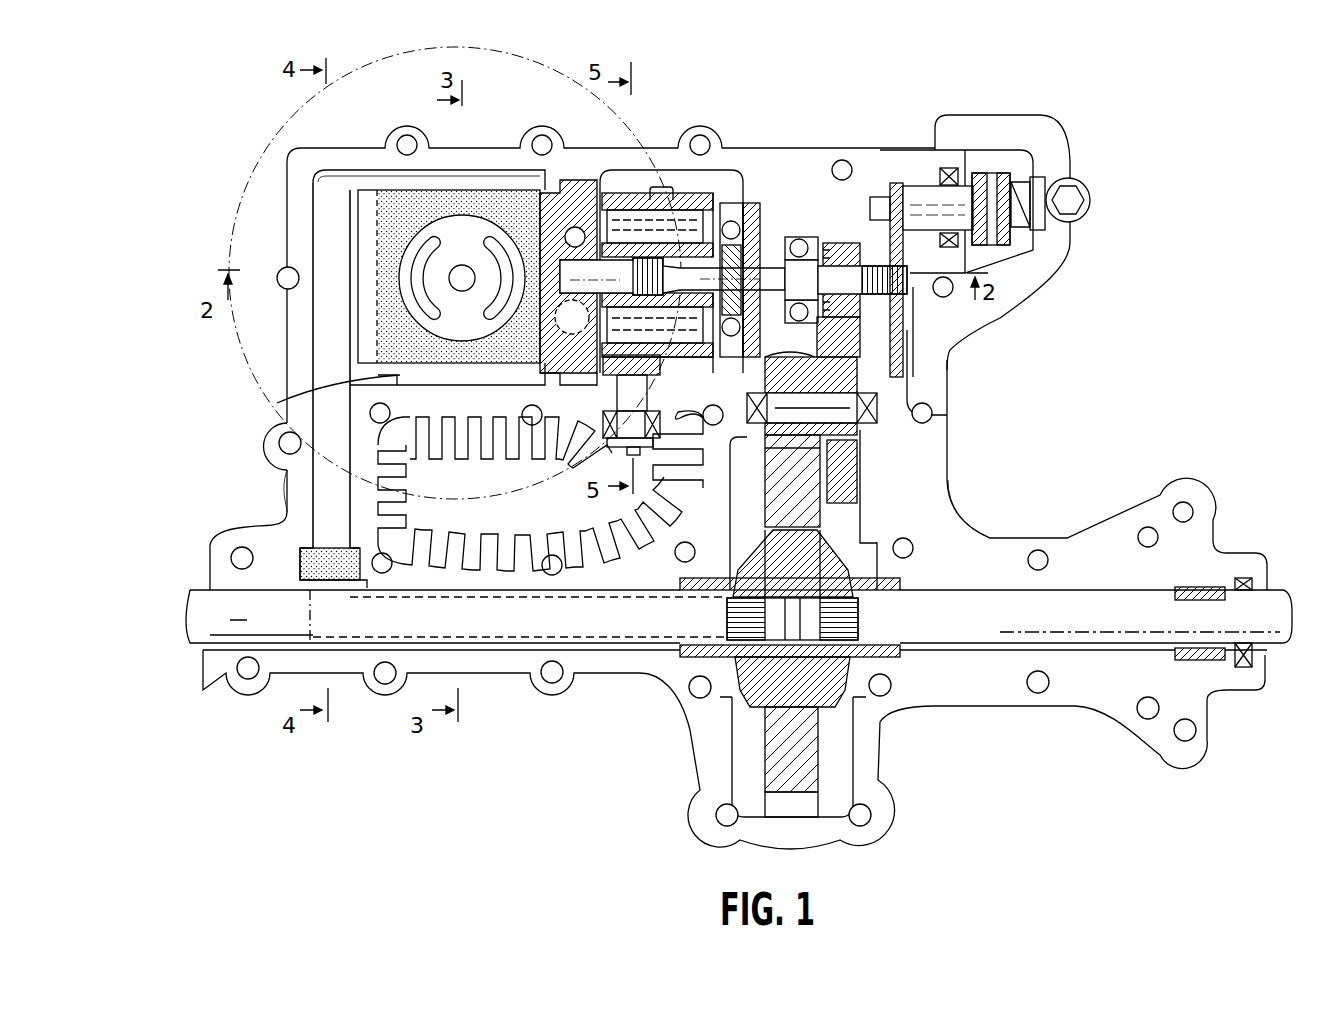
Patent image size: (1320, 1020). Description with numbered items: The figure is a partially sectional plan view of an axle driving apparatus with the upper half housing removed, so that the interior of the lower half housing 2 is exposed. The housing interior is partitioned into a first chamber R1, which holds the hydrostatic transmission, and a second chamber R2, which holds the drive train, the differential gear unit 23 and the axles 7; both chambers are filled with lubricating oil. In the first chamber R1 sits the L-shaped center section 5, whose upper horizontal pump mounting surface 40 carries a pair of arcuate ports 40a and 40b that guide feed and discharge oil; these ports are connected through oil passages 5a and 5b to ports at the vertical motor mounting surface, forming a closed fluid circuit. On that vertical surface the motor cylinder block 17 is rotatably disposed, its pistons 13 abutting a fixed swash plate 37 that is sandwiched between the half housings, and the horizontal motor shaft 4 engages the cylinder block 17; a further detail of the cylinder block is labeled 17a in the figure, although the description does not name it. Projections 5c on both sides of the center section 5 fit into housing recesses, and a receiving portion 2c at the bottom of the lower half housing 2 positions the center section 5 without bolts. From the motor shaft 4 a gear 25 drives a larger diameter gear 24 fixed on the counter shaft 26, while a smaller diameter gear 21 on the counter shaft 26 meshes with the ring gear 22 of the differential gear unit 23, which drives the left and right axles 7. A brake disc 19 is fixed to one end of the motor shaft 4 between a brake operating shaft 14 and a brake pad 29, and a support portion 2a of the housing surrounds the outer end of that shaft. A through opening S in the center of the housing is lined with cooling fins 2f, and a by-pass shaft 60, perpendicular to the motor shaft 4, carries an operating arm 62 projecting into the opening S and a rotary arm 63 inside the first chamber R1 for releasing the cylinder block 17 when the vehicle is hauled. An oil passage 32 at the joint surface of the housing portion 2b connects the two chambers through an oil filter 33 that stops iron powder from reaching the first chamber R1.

The lower half housing 2 is at (1067, 538).
The support portion 2a is at (982, 125).
The housing portion 2b is at (290, 497).
The receiving portion 2c is at (352, 162).
The cooling fins 2f is at (458, 446).
The motor shaft 4 is at (812, 296).
The center section 5 is at (355, 232).
The oil passage 5a is at (562, 180).
The oil passage 5b is at (530, 392).
The projections 5c is at (575, 200).
The axles 7 is at (594, 638).
The pistons 13 is at (728, 215).
The brake operating shaft 14 is at (915, 188).
The cylinder block 17 is at (622, 195).
The motor shaft 17a is at (662, 190).
The brake disc 19 is at (805, 372).
The smaller diameter gear 21 is at (870, 400).
The ring gear 22 is at (815, 765).
The differential gear unit 23 is at (840, 706).
The larger diameter gear 24 is at (820, 460).
The gear 25 is at (838, 245).
The counter shaft 26 is at (852, 440).
The brake pad 29 is at (879, 225).
The oil passage 32 is at (287, 473).
The oil filter 33 is at (327, 550).
The fixed swash plate 37 is at (757, 210).
The pump mounting surface 40 is at (462, 215).
The arcuate port 40a is at (425, 255).
The arcuate port 40b is at (498, 252).
The by-pass shaft 60 is at (648, 455).
The operating arm 62 is at (603, 440).
The rotary arm 63 is at (652, 382).
The first chamber R1 is at (277, 406).
The second chamber R2 is at (855, 522).
The through opening S is at (508, 530).